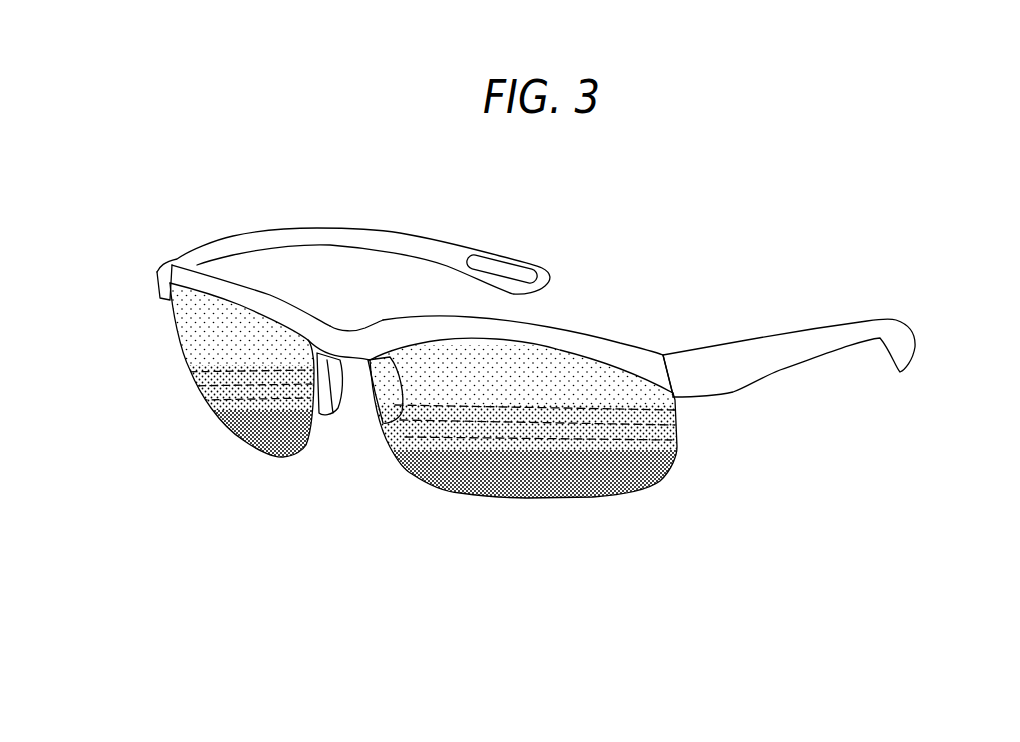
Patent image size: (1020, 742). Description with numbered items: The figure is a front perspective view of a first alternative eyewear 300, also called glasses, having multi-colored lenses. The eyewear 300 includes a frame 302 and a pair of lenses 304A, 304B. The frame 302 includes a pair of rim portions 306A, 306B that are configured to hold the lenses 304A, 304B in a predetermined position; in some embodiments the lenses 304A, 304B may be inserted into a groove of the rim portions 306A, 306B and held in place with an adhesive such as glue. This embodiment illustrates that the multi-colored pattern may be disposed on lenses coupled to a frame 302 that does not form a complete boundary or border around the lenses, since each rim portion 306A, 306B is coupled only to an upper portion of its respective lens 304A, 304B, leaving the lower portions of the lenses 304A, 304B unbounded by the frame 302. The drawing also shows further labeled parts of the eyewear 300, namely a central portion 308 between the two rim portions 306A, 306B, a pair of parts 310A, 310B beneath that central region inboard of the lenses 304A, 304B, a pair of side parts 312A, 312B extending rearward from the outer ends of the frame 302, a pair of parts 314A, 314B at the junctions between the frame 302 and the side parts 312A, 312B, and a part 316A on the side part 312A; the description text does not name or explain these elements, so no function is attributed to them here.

The eyewear 300 is at (175, 228).
The frame 302 is at (444, 312).
The lens 304A is at (267, 455).
The lens 304B is at (613, 500).
The rim portion 306A is at (275, 298).
The rim portion 306B is at (553, 334).
The bridge 308 is at (350, 320).
The left nose pad 310A is at (333, 413).
The right nose pad 310B is at (383, 423).
The left temple 312A is at (335, 203).
The right temple 312B is at (815, 330).
The left hinge 314A is at (155, 298).
The right hinge 314B is at (686, 408).
The temple slot 316A is at (517, 277).